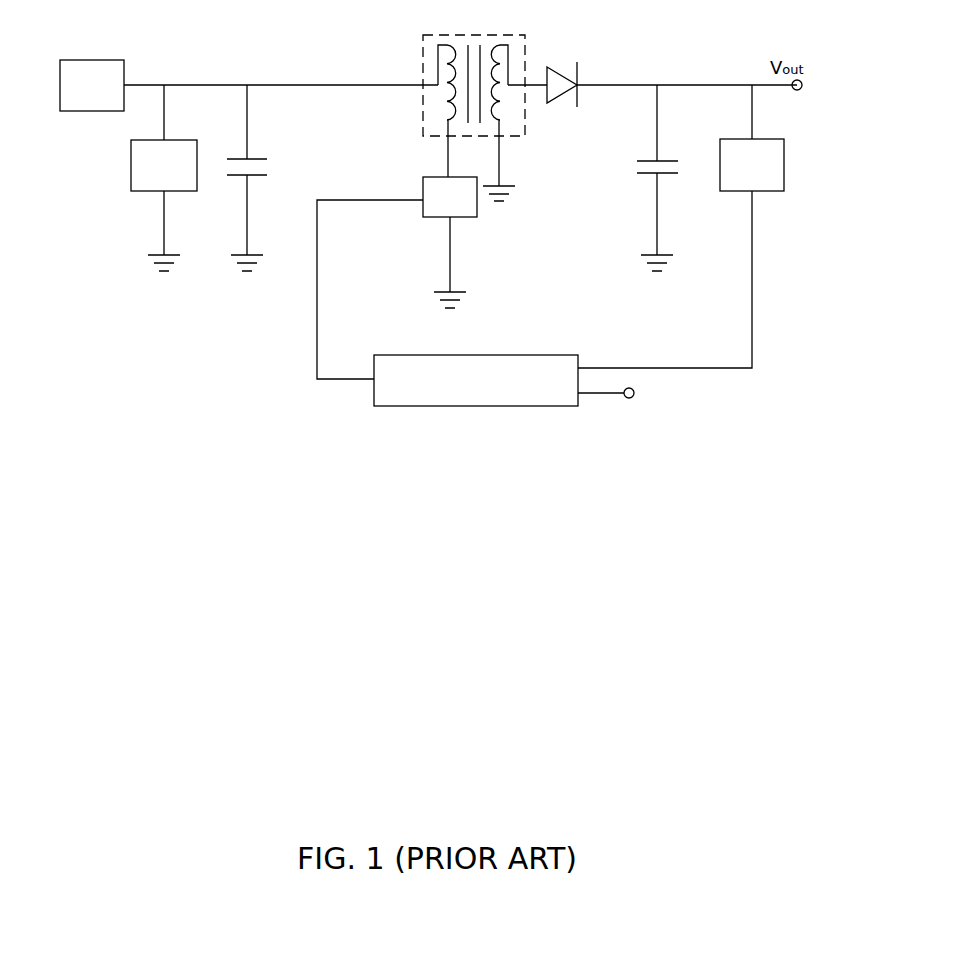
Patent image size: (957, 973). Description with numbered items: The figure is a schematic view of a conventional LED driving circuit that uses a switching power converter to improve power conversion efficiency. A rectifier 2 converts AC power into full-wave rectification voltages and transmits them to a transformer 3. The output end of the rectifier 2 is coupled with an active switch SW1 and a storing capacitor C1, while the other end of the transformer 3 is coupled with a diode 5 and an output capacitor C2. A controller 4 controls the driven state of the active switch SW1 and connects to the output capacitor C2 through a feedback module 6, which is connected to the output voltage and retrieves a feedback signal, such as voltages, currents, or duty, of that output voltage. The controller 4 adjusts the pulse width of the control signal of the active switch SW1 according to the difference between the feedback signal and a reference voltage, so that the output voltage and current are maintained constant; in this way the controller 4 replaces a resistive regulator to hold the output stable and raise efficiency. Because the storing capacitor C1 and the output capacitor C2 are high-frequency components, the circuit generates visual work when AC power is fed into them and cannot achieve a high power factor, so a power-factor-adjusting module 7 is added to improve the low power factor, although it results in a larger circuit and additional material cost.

The rectifier 2 is at (86, 96).
The transformer 3 is at (441, 34).
The controller 4 is at (470, 391).
The diode 5 is at (562, 77).
The feedback module 6 is at (746, 176).
The power-factor-adjusting module 7 is at (158, 176).
The active switch SW1 is at (434, 208).
The storing capacitor C1 is at (262, 178).
The output capacitor C2 is at (673, 178).